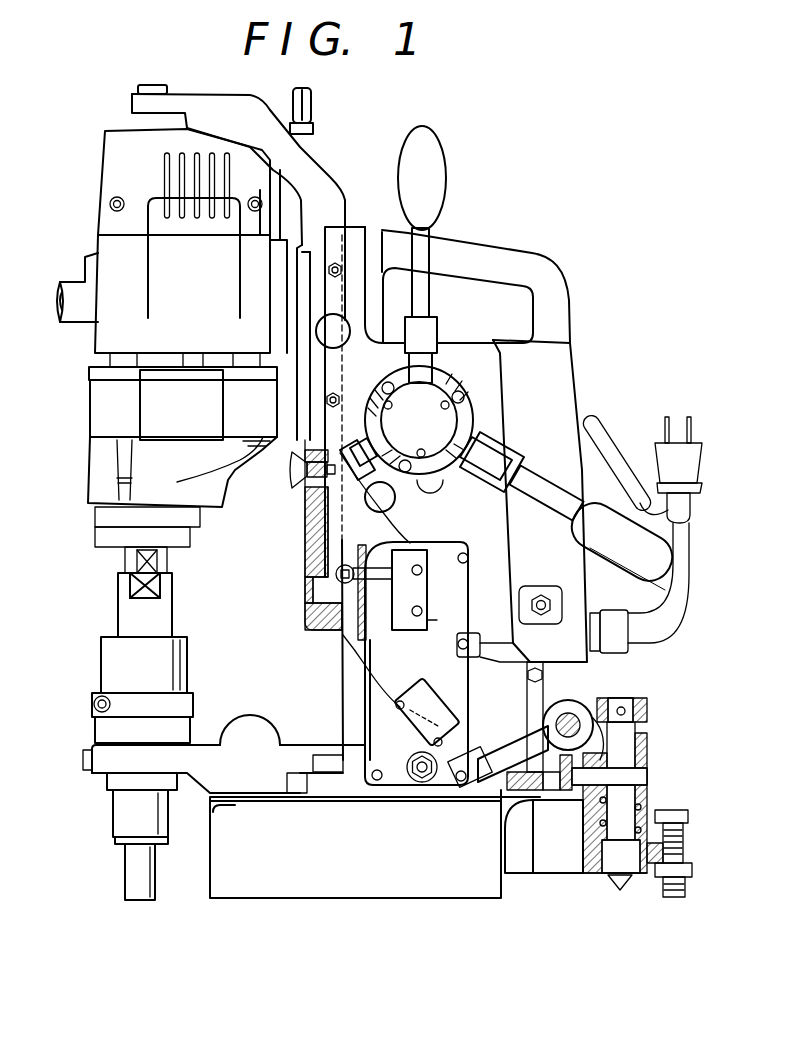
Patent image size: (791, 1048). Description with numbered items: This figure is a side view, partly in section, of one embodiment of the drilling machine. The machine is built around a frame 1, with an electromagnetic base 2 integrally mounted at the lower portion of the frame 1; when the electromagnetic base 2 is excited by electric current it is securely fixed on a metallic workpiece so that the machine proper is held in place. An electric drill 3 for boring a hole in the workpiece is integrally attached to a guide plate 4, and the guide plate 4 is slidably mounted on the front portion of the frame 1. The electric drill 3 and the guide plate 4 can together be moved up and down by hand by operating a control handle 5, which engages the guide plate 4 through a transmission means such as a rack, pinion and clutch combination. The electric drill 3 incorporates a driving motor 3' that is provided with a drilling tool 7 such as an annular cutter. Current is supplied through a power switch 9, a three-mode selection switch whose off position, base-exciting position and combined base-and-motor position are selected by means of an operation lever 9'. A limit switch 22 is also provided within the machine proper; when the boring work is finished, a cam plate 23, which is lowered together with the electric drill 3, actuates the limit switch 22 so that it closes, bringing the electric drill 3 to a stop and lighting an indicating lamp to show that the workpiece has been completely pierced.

The frame 1 is at (543, 393).
The electromagnetic base 2 is at (340, 863).
The electric drill 3 is at (174, 329).
The driving motor 3' is at (140, 443).
The guide plate 4 is at (313, 537).
The control handle 5 is at (420, 260).
The drilling tool 7 is at (137, 863).
The power switch 9 is at (453, 721).
The operation lever 9' is at (327, 744).
The limit switch 22 is at (357, 566).
The cam plate 23 is at (333, 485).